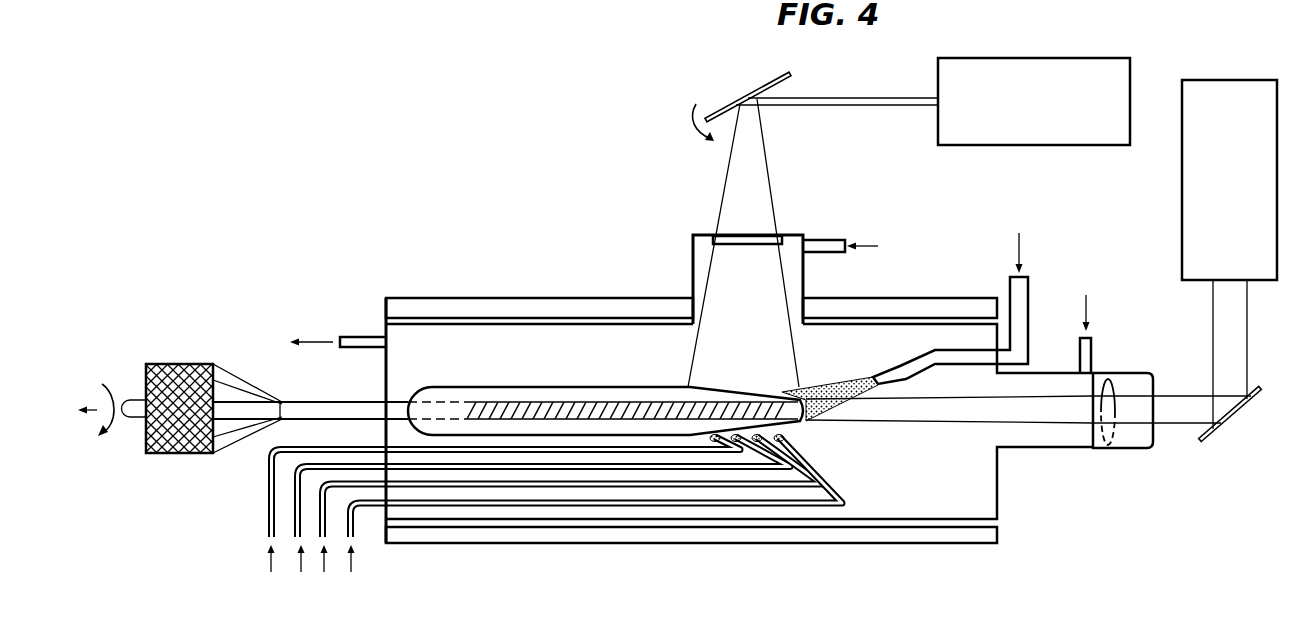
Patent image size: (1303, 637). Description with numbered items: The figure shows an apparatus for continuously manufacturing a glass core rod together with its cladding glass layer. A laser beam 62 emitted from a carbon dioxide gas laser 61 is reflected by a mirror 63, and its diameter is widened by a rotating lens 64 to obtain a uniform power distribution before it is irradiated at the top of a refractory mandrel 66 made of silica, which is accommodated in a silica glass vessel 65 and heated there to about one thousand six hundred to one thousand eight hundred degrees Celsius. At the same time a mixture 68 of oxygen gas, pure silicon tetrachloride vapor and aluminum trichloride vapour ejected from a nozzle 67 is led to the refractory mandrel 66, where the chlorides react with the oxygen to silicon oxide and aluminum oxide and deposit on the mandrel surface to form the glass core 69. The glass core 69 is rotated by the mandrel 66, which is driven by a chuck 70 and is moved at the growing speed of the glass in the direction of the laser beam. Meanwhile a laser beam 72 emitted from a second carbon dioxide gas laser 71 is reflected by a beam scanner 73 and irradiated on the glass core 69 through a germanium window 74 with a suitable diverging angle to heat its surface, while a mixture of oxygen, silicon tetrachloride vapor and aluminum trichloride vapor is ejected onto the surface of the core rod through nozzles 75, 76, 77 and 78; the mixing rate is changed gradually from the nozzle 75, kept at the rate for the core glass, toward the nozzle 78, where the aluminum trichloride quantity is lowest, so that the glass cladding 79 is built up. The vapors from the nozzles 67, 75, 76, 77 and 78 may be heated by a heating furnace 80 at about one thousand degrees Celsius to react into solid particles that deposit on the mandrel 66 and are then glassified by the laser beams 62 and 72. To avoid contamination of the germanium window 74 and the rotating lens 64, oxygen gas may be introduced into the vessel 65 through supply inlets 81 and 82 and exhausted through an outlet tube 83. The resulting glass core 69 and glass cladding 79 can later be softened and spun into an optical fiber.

The carbon dioxide gas laser 61 is at (1188, 209).
The laser beam 62 is at (1225, 332).
The mirror 63 is at (1235, 416).
The rotating lens 64 is at (1106, 447).
The silica glass vessel 65 is at (998, 470).
The refractory mandrel 66 is at (345, 407).
The nozzle 67 is at (918, 352).
The mixture of oxygen gas, silicon tetrachloride vapor and aluminum trichloride vapo 68 is at (845, 380).
The SiO2·Al2O3 glass core 69 is at (625, 400).
The chuck 70 is at (203, 365).
The carbon dioxide gas laser 71 is at (1003, 58).
The laser beam 72 is at (883, 98).
The beam scanner 73 is at (788, 78).
The germanium window 74 is at (770, 237).
The nozzle 75 is at (357, 540).
The nozzle 76 is at (318, 540).
The nozzle 77 is at (293, 540).
The nozzle 78 is at (266, 526).
The glass cladding 79 is at (535, 387).
The heating furnace 80 is at (891, 298).
The supply inlet 81 is at (842, 240).
The supply inlet 82 is at (1091, 350).
The outlet tube 83 is at (357, 336).